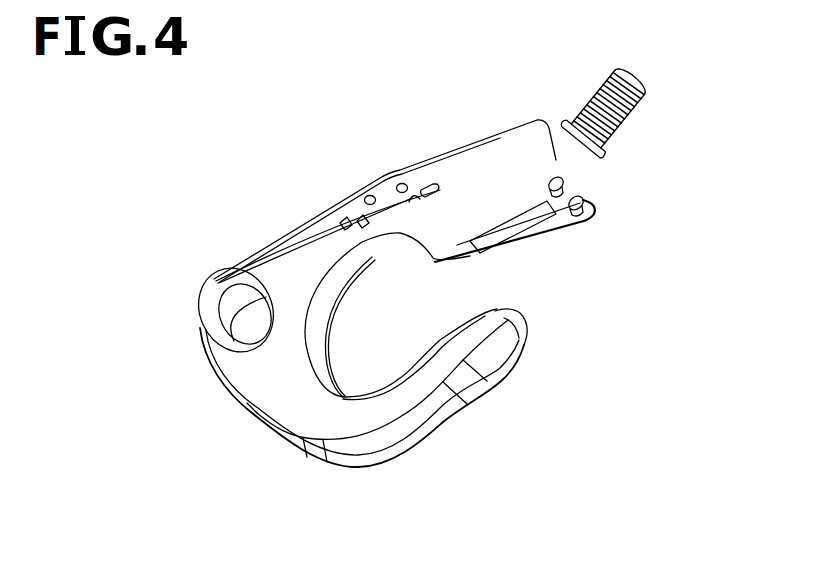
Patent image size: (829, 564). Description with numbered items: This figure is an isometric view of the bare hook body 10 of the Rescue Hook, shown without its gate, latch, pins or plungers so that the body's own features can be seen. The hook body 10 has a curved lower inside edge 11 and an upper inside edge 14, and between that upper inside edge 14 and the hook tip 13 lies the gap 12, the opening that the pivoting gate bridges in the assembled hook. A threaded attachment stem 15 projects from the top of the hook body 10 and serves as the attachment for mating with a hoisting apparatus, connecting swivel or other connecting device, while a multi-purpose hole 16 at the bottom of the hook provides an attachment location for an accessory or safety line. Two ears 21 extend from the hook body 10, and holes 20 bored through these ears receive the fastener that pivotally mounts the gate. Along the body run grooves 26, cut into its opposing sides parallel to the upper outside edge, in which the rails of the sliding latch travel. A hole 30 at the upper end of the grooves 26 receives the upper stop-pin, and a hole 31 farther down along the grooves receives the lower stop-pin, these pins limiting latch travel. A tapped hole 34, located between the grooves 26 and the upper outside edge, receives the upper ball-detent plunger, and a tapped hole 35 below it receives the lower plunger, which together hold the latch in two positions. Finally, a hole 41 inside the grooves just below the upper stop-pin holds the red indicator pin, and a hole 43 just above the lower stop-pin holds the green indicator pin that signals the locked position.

The hook body 10 is at (385, 164).
The lower inside edge 11 is at (362, 427).
The gap 12 is at (515, 252).
The hook tip 13 is at (541, 348).
The upper inside edge 14 is at (401, 316).
The threaded attachment stem 15 is at (647, 100).
The multi-purpose hole 16 is at (207, 304).
The holes 20 is at (622, 184).
The ears 21 is at (565, 240).
The grooves 26 is at (324, 233).
The hole 30 is at (461, 103).
The hole 31 is at (289, 187).
The tapped hole 34 is at (364, 121).
The tapped hole 35 is at (338, 159).
The hole 41 is at (393, 106).
The hole 43 is at (304, 186).